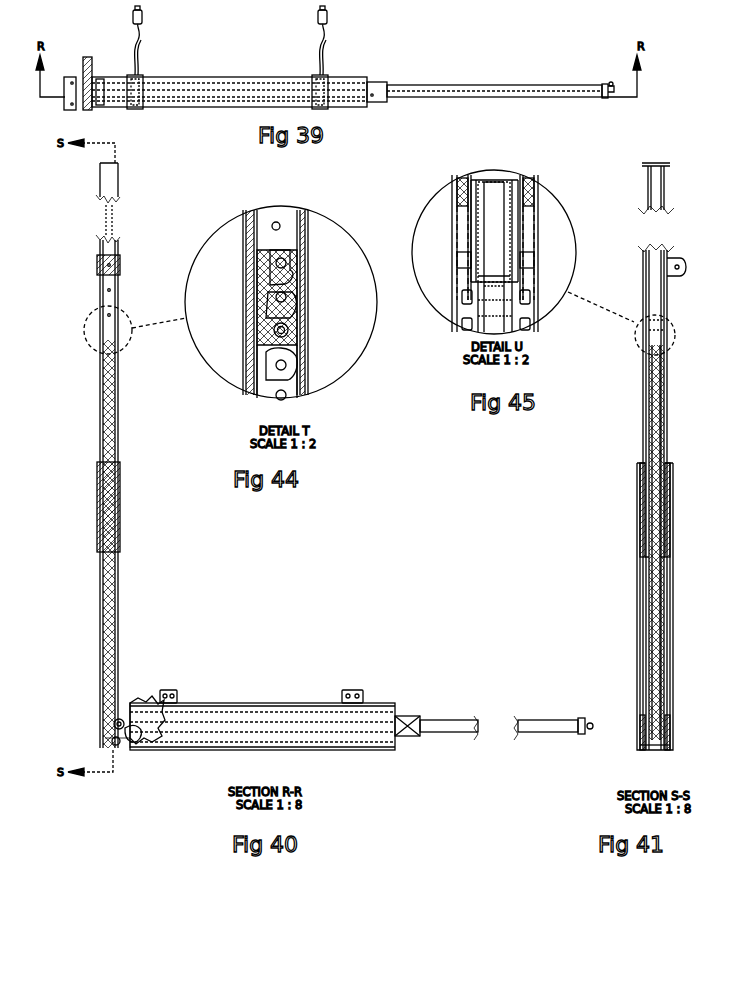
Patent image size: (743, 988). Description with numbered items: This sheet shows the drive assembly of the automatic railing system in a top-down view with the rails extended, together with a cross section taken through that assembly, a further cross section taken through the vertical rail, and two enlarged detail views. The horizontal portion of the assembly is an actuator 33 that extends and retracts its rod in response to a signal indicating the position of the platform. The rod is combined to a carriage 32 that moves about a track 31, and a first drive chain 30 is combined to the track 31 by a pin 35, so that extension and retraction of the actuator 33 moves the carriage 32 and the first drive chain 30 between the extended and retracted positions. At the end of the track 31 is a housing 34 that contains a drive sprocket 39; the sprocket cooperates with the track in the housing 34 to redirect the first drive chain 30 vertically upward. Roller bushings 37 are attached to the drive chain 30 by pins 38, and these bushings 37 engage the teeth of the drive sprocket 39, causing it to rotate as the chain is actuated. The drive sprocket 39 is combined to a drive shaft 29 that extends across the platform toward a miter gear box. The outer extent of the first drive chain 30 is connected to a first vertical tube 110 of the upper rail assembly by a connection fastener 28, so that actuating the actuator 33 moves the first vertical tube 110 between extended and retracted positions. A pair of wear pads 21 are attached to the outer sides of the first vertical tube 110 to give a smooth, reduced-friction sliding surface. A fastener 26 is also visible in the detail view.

In FIG. 45, the wear pads 21 is at (455, 188).
In FIG. 45, the fastener 26 is at (456, 258).
In FIG. 44, the connection fastener 28 is at (288, 327).
In FIG. 40, the drive shaft 29 is at (112, 722).
In FIG. 40, the first drive chain 30 is at (118, 583).
In FIG. 40, the track 31 is at (285, 703).
In FIG. 40, the carriage 32 is at (177, 700).
In FIG. 40, the actuator 33 is at (440, 722).
In FIG. 40, the housing 34 is at (110, 742).
In FIG. 40, the pin 35 is at (147, 700).
In FIG. 45, the roller bushings 37 is at (470, 302).
In FIG. 45, the pins 38 is at (460, 298).
In FIG. 40, the drive sprocket 39 is at (130, 752).
In FIG. 45, the first vertical tube 110 is at (512, 172).